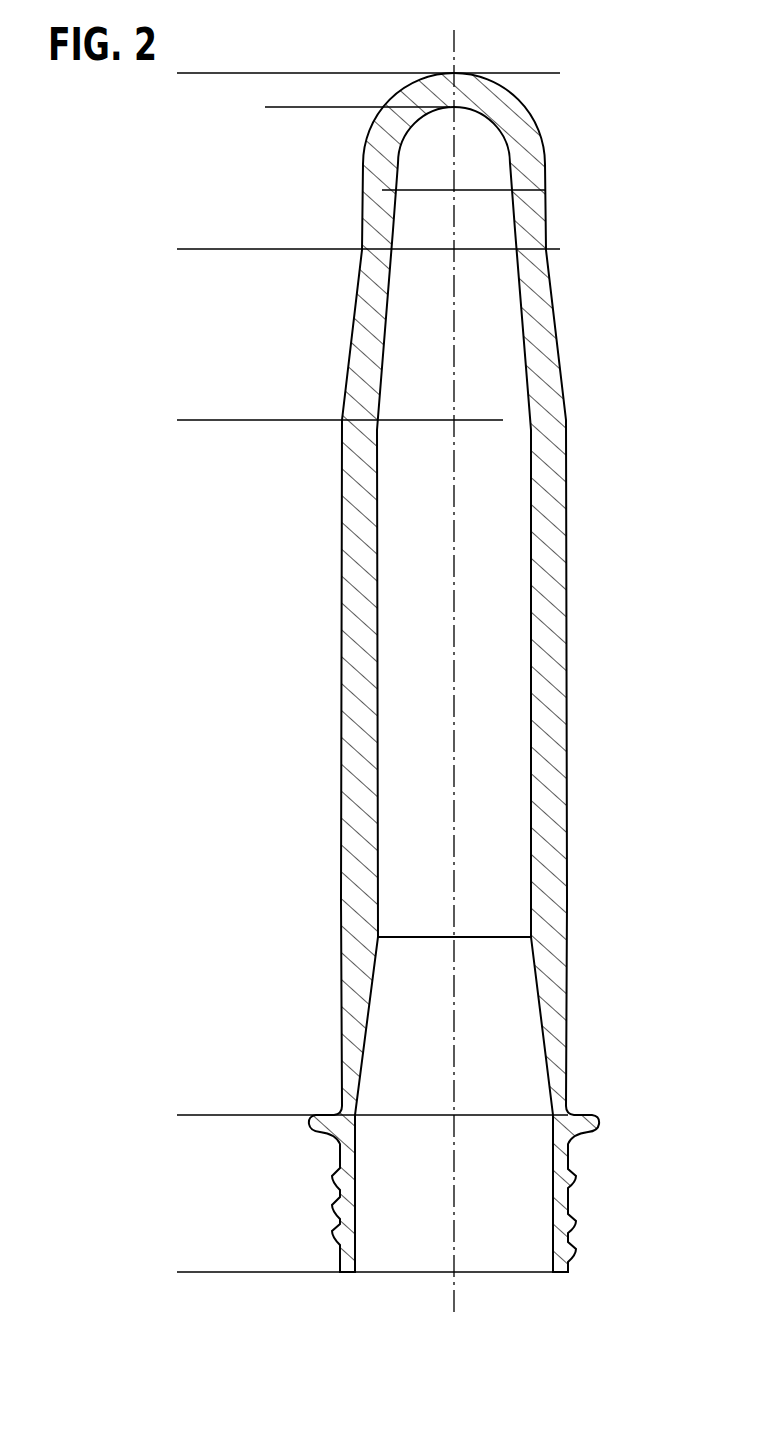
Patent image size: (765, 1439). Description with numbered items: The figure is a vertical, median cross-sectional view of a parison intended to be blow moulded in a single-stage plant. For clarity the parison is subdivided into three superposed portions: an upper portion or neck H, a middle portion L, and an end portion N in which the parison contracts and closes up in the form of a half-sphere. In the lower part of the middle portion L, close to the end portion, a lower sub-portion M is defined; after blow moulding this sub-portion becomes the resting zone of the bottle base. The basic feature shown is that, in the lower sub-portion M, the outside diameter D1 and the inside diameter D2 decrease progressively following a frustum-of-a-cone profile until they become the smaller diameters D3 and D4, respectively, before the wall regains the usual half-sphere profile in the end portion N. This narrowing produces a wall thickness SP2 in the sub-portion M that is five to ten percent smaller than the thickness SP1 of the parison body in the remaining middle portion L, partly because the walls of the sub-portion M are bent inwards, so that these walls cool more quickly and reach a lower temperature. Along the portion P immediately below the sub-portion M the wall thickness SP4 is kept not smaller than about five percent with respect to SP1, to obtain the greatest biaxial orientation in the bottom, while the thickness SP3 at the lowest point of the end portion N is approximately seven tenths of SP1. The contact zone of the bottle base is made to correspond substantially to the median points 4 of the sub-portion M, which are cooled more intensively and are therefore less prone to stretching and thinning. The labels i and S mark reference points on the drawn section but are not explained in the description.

The median points 4 is at (370, 361).
The inner wall inflection point i is at (424, 249).
The outer wall transition point S is at (503, 420).
The outside diameter D1 is at (562, 430).
The inside diameter D2 is at (525, 367).
The reduced outside diameter D3 is at (368, 257).
The reduced inside diameter D4 is at (665, 165).
The thickness of the parison body SP1 is at (493, 547).
The thickness of the sub-portion SP2 is at (495, 325).
The thickness of the wall at the lowest point of the end portion SP3 is at (271, 135).
The wall thickness SP4 is at (578, 179).
The end portion N is at (177, 249).
The portion P is at (229, 135).
The lower sub-portion M is at (229, 249).
The middle portion L is at (177, 249).
The upper portion or neck H is at (177, 1115).